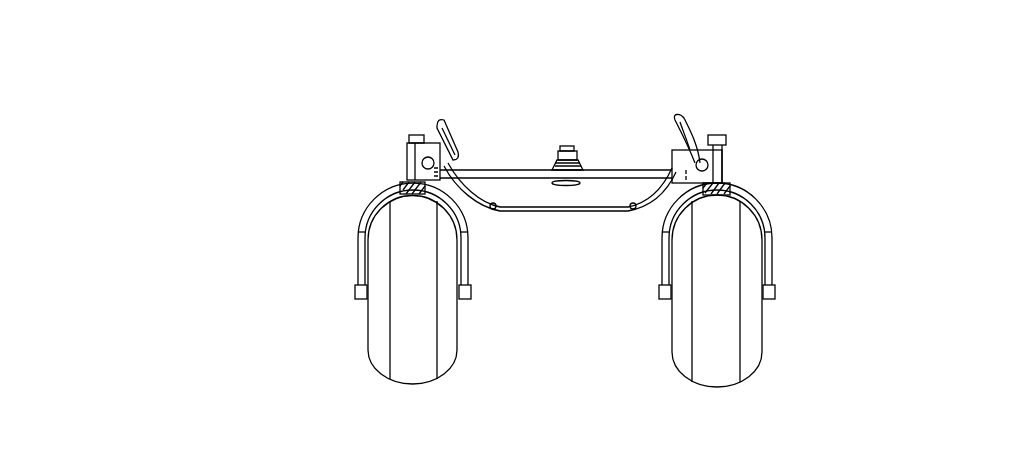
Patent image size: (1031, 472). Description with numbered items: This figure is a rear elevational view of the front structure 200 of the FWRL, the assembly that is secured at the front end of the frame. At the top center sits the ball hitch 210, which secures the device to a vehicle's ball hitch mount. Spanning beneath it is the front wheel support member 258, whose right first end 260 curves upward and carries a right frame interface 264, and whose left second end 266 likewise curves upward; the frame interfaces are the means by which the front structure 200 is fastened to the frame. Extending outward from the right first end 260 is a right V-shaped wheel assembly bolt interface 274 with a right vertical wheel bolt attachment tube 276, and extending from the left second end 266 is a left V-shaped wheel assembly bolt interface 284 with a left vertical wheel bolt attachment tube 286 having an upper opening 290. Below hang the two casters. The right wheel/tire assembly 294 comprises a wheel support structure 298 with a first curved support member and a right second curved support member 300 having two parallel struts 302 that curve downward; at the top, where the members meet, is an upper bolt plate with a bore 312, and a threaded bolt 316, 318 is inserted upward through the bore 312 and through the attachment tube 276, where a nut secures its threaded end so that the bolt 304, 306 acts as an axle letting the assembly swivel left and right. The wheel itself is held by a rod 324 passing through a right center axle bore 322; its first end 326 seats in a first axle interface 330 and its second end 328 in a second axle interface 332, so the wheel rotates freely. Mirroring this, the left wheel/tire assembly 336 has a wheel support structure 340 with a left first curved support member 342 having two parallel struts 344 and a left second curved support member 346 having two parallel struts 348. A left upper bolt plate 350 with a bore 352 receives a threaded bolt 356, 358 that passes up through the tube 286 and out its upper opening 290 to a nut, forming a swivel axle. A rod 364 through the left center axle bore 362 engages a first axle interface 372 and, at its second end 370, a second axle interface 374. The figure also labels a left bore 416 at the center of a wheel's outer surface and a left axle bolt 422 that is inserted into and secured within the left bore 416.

The front structure 200 is at (278, 103).
The ball hitch 210 is at (568, 146).
The front wheel support member 258 is at (590, 213).
The right first end 260 is at (753, 102).
The right frame interface 264 is at (678, 120).
The left second end 266 is at (442, 122).
The right V-shaped wheel assembly bolt interface 274 is at (727, 140).
The right vertical wheel bolt attachment tube 276 is at (732, 170).
The left V-shaped wheel assembly bolt interface 284 is at (372, 206).
The left vertical wheel bolt attachment tube 286 is at (402, 188).
The upper opening 290 is at (407, 172).
The right wheel/tire assembly 294 is at (832, 410).
The wheel support structure 298 is at (774, 210).
The right second curved support member 300 is at (743, 255).
The two parallel struts 302 is at (776, 252).
The right strap inner arm 304 is at (661, 255).
The bolt 306 is at (662, 265).
The bore 312 is at (704, 158).
The threaded bolt 316 is at (828, 145).
The bolt head 318 is at (828, 145).
The right center axle bore 322 is at (776, 283).
The rod 324 is at (877, 296).
The first end 326 is at (877, 296).
The second end 328 is at (660, 297).
The first axle interface 330 is at (772, 321).
The second axle interface 332 is at (776, 298).
The left wheel/tire assembly 336 is at (322, 405).
The wheel support structure 340 is at (770, 188).
The left first curved support member 342 is at (389, 239).
The two parallel struts 344 is at (355, 267).
The left second curved support member 346 is at (467, 234).
The two parallel struts 348 is at (468, 252).
The left upper bolt plate 350 is at (330, 90).
The bore 352 is at (412, 136).
The threaded bolt 356 is at (313, 166).
The left bracket plate 358 is at (407, 160).
The left center axle bore 362 is at (259, 330).
The rod 364 is at (358, 298).
The second end 370 is at (472, 291).
The first axle interface 372 is at (396, 290).
The second axle interface 374 is at (362, 302).
The left bore 416 is at (407, 150).
The left axle bolt 422 is at (259, 330).